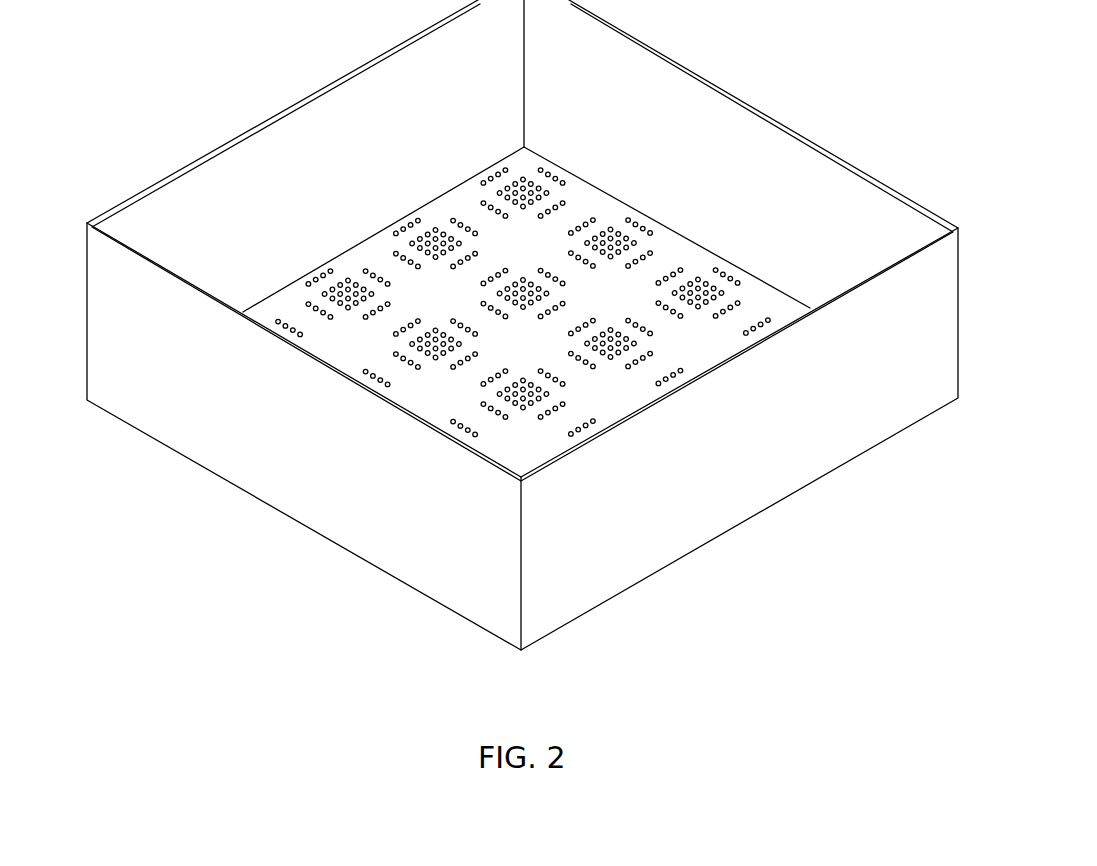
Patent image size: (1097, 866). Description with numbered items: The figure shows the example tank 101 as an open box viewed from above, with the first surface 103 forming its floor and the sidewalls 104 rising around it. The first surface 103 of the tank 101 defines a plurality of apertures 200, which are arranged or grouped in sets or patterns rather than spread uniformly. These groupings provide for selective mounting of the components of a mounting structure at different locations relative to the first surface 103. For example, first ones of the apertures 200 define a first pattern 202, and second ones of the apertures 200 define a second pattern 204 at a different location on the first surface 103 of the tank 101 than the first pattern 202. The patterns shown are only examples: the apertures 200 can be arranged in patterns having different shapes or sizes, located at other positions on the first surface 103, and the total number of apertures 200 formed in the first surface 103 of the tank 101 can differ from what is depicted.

The tank 101 is at (501, 325).
The first surface 103 is at (526, 290).
The sidewalls 104 is at (501, 325).
The apertures 200 is at (523, 290).
The first pattern 202 is at (486, 293).
The second pattern 204 is at (655, 293).